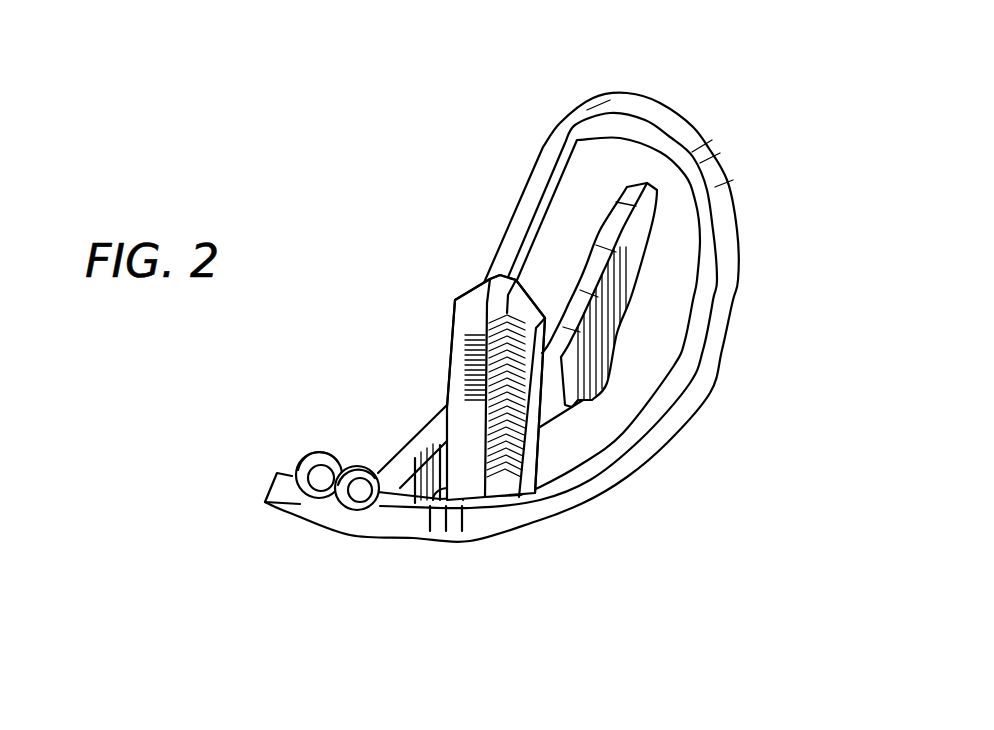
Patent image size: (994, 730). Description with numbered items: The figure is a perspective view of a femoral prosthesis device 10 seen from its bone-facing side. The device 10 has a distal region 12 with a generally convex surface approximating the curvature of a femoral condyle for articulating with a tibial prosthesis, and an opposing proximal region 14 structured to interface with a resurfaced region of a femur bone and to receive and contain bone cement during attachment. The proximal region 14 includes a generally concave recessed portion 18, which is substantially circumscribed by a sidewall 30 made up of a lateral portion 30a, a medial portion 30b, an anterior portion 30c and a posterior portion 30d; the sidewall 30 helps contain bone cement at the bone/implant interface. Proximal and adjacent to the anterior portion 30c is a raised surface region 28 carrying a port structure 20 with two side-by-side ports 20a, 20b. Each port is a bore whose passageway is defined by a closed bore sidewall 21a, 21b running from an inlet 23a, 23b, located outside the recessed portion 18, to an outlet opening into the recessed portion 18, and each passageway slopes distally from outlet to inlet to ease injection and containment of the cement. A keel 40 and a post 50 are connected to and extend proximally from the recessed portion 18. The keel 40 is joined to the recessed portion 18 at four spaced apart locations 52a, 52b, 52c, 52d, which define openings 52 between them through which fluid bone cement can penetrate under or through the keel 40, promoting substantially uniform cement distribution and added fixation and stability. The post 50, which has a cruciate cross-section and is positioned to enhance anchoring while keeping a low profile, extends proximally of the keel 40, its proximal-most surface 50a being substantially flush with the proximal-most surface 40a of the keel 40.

The prosthesis device 10 is at (711, 77).
The distal region 12 is at (457, 550).
The proximal region 14 is at (541, 262).
The recessed portion 18 is at (582, 164).
The port structure 20 is at (292, 444).
The port 20a is at (293, 480).
The port 20b is at (340, 493).
The closed bore sidewall 21a is at (302, 455).
The closed bore sidewall 21b is at (355, 450).
The inlet 23a is at (334, 490).
The inlet 23b is at (387, 507).
The raised surface region 28 is at (317, 450).
The sidewall 30 is at (418, 428).
The lateral portion 30a is at (715, 304).
The medial portion 30b is at (547, 202).
The anterior portion 30c is at (356, 523).
The posterior portion 30d is at (648, 103).
The keel 40 is at (412, 398).
The proximal-most surface of the keel 40a is at (648, 190).
The post 50 is at (437, 296).
The proximal-most surface of the post 50a is at (500, 283).
The opening 52 is at (652, 264).
The spaced apart location 52a is at (650, 207).
The spaced apart location 52b is at (613, 352).
The spaced apart location 52c is at (477, 513).
The spaced apart location 52d is at (432, 500).